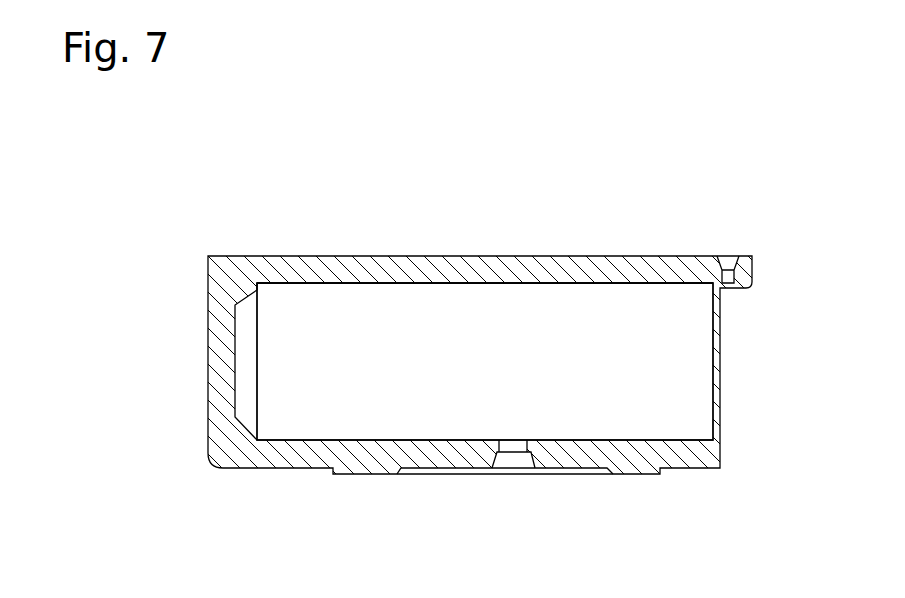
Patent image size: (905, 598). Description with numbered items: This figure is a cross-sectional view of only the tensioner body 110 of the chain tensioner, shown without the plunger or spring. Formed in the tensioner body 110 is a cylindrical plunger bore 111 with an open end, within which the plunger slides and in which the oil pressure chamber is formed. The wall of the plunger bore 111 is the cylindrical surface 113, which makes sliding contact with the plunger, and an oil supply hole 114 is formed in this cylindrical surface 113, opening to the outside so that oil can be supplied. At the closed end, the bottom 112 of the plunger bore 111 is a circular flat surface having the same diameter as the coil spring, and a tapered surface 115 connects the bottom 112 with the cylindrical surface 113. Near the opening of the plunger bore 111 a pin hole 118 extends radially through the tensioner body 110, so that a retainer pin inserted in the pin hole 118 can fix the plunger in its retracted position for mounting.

The tensioner body 110 is at (146, 203).
The plunger bore 111 is at (558, 360).
The bottom 112 is at (238, 365).
The cylindrical surface 113 is at (436, 284).
The oil supply hole 114 is at (513, 453).
The tapered surface 115 is at (254, 290).
The pin hole 118 is at (728, 265).